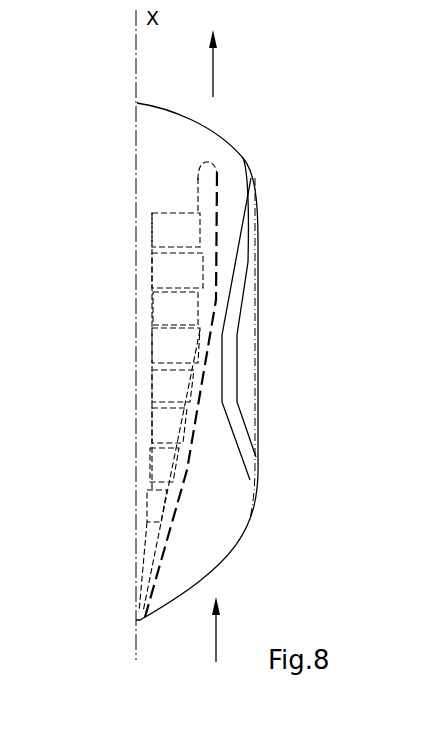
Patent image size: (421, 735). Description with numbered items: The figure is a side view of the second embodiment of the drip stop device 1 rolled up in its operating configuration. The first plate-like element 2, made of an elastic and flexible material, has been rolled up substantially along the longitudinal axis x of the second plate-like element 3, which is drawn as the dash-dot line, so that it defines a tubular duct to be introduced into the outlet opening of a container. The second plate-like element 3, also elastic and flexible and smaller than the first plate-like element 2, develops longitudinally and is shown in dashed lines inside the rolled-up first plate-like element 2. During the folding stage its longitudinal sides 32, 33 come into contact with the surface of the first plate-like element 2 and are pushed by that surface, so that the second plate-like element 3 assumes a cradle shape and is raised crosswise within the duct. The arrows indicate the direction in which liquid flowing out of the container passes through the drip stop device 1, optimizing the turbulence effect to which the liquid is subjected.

The drip stop device 1 is at (292, 63).
The first plate-like element 2 is at (163, 138).
The second plate-like element 3 is at (207, 173).
The longitudinal side 32 is at (180, 500).
The longitudinal side 33 is at (119, 412).